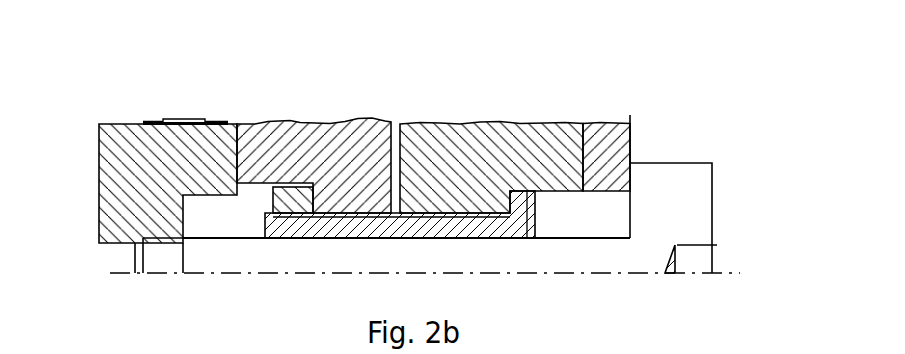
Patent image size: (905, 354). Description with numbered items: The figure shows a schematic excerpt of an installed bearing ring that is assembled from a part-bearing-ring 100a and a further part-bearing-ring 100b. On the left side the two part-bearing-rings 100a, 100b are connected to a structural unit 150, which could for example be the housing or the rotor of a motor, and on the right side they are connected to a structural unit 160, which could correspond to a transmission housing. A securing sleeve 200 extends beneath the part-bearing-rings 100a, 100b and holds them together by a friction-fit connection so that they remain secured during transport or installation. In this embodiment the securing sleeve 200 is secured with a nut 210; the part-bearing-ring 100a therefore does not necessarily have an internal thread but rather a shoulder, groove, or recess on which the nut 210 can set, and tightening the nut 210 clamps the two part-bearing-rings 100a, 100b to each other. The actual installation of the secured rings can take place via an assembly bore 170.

The structural unit 150 is at (171, 120).
The part-bearing-ring 100a is at (355, 93).
The further part-bearing-ring 100b is at (473, 122).
The structural unit 160 is at (602, 122).
The securing sleeve 200 is at (537, 225).
The nut 210 is at (290, 204).
The assembly bore 170 is at (700, 218).